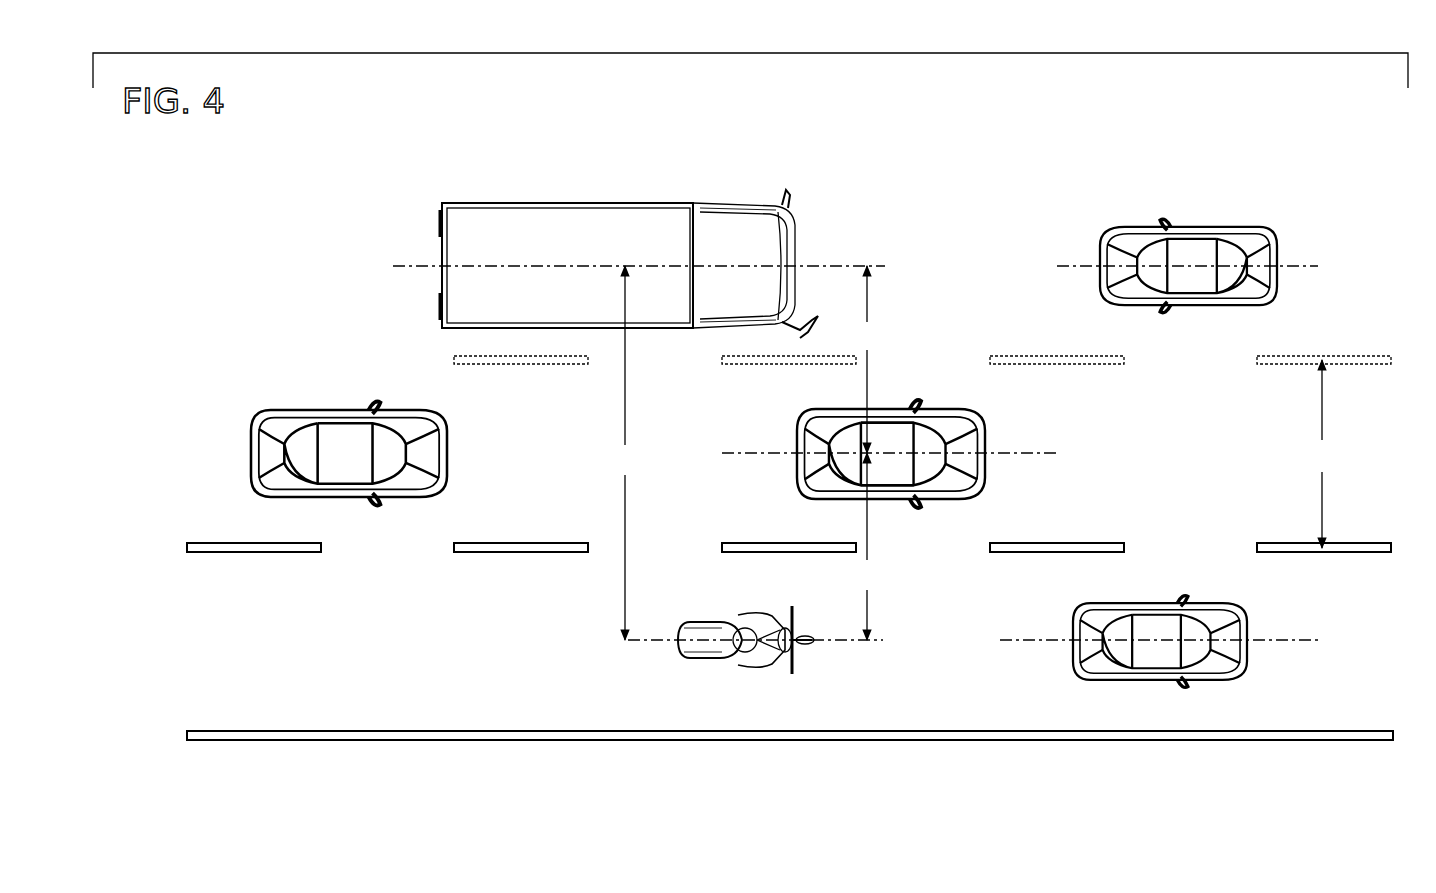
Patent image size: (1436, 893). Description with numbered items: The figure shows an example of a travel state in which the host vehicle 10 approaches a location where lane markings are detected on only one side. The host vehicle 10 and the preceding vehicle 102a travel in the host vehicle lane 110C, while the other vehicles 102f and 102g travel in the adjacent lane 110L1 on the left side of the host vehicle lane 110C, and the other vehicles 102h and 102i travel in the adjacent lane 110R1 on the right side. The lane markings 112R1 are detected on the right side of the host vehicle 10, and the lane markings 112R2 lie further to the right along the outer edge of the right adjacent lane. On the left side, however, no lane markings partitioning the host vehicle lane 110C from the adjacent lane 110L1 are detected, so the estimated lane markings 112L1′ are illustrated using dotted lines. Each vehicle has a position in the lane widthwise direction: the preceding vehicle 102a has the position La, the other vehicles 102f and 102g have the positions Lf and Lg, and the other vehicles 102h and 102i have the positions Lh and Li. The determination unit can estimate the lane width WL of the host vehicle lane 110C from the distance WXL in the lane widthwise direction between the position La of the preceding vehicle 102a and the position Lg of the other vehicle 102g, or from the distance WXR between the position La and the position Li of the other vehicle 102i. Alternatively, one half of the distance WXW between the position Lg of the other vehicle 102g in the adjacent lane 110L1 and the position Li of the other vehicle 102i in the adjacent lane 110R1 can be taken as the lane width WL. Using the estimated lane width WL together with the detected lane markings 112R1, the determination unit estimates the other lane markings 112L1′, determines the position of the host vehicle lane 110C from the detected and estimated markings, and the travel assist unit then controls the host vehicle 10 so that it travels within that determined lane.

The host vehicle 10 is at (440, 425).
The preceding vehicle 102a is at (981, 425).
The other vehicle 102f is at (1163, 233).
The other vehicle 102g is at (516, 220).
The other vehicle 102h is at (1212, 612).
The other vehicle 102i is at (707, 622).
The adjacent lane 110L1 is at (200, 234).
The host vehicle lane 110C is at (200, 412).
The adjacent lane 110R1 is at (200, 616).
The estimated lane markings 112L1′ is at (453, 360).
The lane markings 112R1 is at (187, 548).
The lane markings 112R2 is at (187, 735).
The position of the other vehicle Lg is at (838, 262).
The position of the other vehicle Lf is at (1304, 262).
The position of the preceding vehicle La is at (1034, 457).
The position of the other vehicle Li is at (643, 646).
The position of the other vehicle Lh is at (1291, 637).
The distance in the lane widthwise direction WXW is at (625, 453).
The distance in the lane widthwise direction WXL is at (866, 359).
The distance in the lane widthwise direction WXR is at (866, 546).
The lane width WL is at (1320, 454).